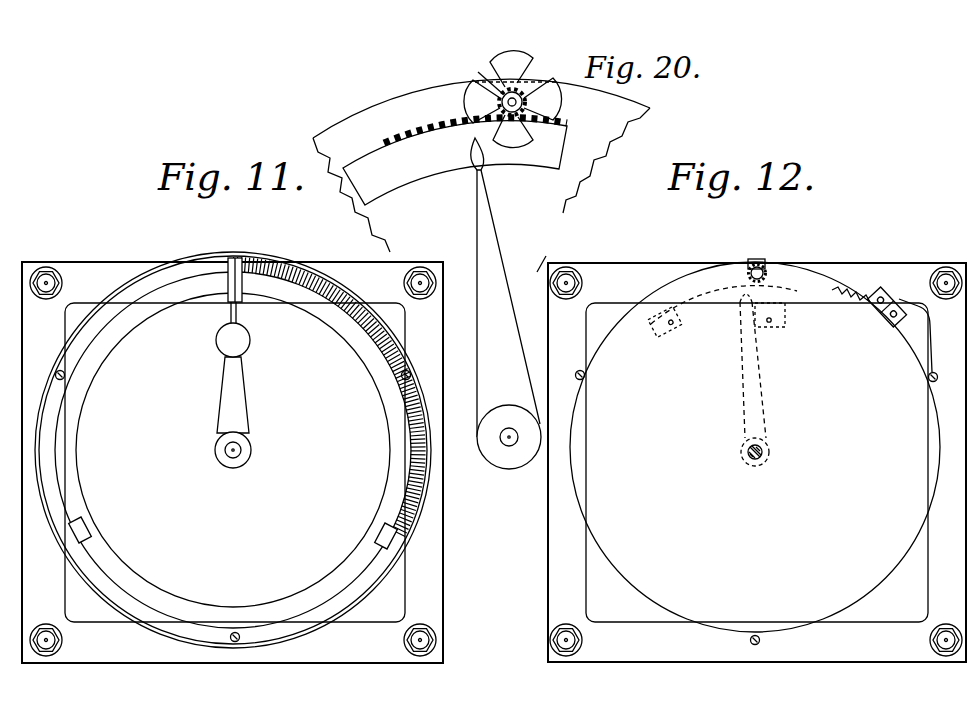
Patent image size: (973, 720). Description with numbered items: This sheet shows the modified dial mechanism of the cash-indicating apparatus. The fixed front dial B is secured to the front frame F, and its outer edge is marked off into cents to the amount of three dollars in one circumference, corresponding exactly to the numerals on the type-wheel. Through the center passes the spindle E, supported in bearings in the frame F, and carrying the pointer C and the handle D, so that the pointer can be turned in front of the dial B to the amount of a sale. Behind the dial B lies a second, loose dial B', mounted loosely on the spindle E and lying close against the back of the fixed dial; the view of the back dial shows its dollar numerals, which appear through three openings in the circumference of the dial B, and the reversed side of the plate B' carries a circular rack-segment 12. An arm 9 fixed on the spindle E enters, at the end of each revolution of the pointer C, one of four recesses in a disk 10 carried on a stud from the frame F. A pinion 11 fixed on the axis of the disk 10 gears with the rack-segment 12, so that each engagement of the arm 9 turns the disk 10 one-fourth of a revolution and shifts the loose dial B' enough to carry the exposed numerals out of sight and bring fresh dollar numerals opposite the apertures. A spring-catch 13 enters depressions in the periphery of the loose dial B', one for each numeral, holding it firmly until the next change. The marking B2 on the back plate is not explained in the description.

In FIG. 20, the arm 9 is at (499, 287).
In FIG. 12, the arm 9 is at (739, 355).
In FIG. 20, the disk 10 is at (526, 62).
In FIG. 12, the disk 10 is at (764, 265).
In FIG. 20, the pinion 11 is at (481, 74).
In FIG. 12, the pinion 11 is at (753, 260).
In FIG. 20, the circular rack-segment 12 is at (455, 161).
In FIG. 12, the circular rack-segment 12 is at (658, 321).
In FIG. 12, the spring-catch 13 is at (882, 325).
In FIG. 11, the fixed front dial B is at (233, 450).
In FIG. 12, the fixed front dial B is at (755, 447).
In FIG. 20, the loose back dial B' is at (481, 175).
In FIG. 12, the dial plate B2 is at (757, 508).
In FIG. 11, the pointer C is at (229, 318).
In FIG. 11, the handle D is at (233, 340).
In FIG. 20, the central spindle E is at (509, 428).
In FIG. 12, the central spindle E is at (762, 452).
In FIG. 11, the frame F is at (232, 462).
In FIG. 12, the frame F is at (757, 462).